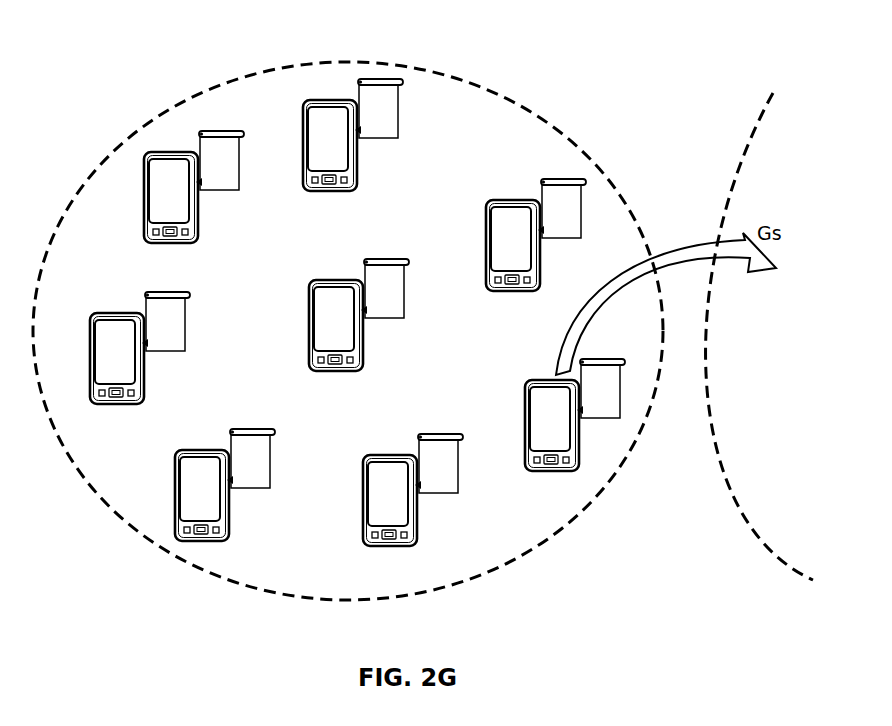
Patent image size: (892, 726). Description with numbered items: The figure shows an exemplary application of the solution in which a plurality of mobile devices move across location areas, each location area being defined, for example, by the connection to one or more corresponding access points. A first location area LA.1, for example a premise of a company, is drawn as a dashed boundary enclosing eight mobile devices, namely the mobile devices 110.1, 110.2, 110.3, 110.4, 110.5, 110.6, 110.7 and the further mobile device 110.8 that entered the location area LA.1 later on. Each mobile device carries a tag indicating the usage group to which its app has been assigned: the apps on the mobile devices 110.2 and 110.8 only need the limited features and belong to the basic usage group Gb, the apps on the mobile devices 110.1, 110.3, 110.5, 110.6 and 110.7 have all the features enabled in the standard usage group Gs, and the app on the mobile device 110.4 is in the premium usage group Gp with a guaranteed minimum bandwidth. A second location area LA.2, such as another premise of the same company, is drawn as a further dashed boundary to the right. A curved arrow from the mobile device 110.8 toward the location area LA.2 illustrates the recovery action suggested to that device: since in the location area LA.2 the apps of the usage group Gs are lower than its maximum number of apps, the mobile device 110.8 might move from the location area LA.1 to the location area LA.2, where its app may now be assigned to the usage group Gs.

The mobile device 110.1 is at (355, 155).
The mobile device 110.2 is at (195, 208).
The mobile device 110.3 is at (142, 372).
The mobile device 110.4 is at (225, 505).
The mobile device 110.5 is at (362, 327).
The mobile device 110.6 is at (415, 505).
The mobile device 110.7 is at (487, 250).
The mobile device 110.8 is at (528, 430).
The location area LA.1 is at (537, 117).
The location area LA.2 is at (729, 177).